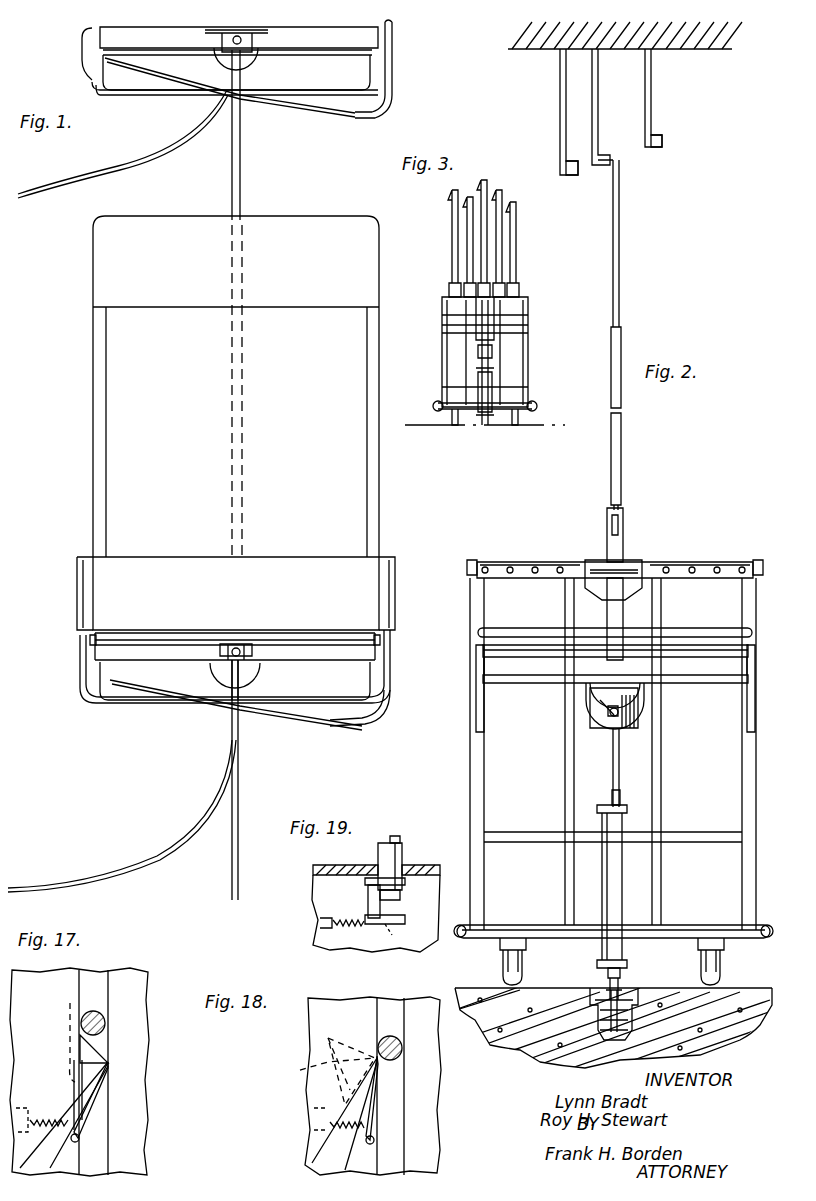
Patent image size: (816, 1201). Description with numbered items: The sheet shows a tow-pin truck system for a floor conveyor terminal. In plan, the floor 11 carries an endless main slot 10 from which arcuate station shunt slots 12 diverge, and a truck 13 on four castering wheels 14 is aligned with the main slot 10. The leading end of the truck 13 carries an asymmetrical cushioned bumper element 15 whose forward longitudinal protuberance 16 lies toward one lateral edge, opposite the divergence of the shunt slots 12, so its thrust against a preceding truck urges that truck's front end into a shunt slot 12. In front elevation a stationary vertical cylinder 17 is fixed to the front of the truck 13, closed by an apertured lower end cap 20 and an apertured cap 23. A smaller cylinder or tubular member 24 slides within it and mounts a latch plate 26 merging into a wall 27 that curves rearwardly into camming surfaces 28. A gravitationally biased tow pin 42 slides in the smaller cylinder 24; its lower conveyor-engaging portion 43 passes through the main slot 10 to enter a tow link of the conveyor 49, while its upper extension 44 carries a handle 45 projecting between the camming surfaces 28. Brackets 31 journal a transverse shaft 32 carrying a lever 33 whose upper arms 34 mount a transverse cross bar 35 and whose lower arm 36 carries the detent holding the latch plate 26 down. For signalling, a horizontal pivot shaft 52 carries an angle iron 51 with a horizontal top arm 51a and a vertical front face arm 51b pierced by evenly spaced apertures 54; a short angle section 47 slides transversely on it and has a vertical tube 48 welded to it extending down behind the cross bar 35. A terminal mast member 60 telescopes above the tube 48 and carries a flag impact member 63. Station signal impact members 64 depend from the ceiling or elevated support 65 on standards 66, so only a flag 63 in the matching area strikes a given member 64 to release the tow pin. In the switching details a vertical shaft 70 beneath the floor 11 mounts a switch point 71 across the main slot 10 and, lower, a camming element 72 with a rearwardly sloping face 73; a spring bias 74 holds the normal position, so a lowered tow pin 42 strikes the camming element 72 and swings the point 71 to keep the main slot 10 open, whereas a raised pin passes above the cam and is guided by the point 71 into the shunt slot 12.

In FIG. 1, the main slot 10 is at (240, 172).
In FIG. 2, the main slot 10 is at (622, 985).
In FIG. 19, the main slot 10 is at (404, 862).
In FIG. 17, the main slot 10 is at (98, 1120).
In FIG. 18, the main slot 10 is at (395, 1115).
In FIG. 1, the floor 11 is at (312, 206).
In FIG. 2, the floor 11 is at (548, 984).
In FIG. 19, the floor 11 is at (354, 866).
In FIG. 17, the floor 11 is at (140, 1000).
In FIG. 18, the floor 11 is at (360, 998).
In FIG. 1, the station shunt slot 12 is at (142, 160).
In FIG. 1, the truck 13 is at (100, 28).
In FIG. 3, the truck 13 is at (525, 362).
In FIG. 2, the castering wheels 14 is at (506, 982).
In FIG. 1, the asymmetrical cushioned bumper element 15 is at (282, 108).
In FIG. 2, the asymmetrical cushioned bumper element 15 is at (704, 916).
In FIG. 1, the forward longitudinal protuberance 16 is at (360, 112).
In FIG. 2, the forward longitudinal protuberance 16 is at (732, 926).
In FIG. 2, the stationary vertical cylinder 17 is at (606, 900).
In FIG. 2, the apertured lower end cap 20 is at (608, 972).
In FIG. 2, the apertured upper cap 23 is at (600, 806).
In FIG. 2, the smaller cylinder or tubular member 24 is at (620, 794).
In FIG. 1, the latch plate 26 is at (256, 70).
In FIG. 2, the latch plate 26 is at (620, 740).
In FIG. 2, the wall 27 is at (608, 728).
In FIG. 1, the camming surfaces 28 is at (212, 64).
In FIG. 2, the camming surfaces 28 is at (590, 696).
In FIG. 2, the brackets 31 is at (470, 682).
In FIG. 2, the transverse shaft 32 is at (722, 685).
In FIG. 2, the lever 33 is at (492, 680).
In FIG. 2, the upper arms 34 is at (478, 656).
In FIG. 2, the transverse cross bar 35 is at (696, 657).
In FIG. 2, the lower arm 36 is at (612, 704).
In FIG. 1, the tow pin 42 is at (262, 44).
In FIG. 2, the tow pin 42 is at (606, 990).
In FIG. 19, the tow pin 42 is at (402, 838).
In FIG. 17, the tow pin 42 is at (106, 1020).
In FIG. 18, the tow pin 42 is at (404, 1050).
In FIG. 19, the lower conveyor-engaging portion 43 is at (398, 894).
In FIG. 2, the upper extension 44 is at (612, 712).
In FIG. 1, the handle 45 is at (248, 66).
In FIG. 2, the handle 45 is at (620, 714).
In FIG. 2, the short angle section 47 is at (628, 562).
In FIG. 2, the vertical tube 48 is at (622, 614).
In FIG. 2, the conveyor 49 is at (540, 1040).
In FIG. 1, the angle iron 51 is at (340, 630).
In FIG. 2, the angle iron 51 is at (572, 562).
In FIG. 2, the horizontal top arm 51a is at (516, 562).
In FIG. 2, the vertical front face arm 51b is at (680, 562).
In FIG. 1, the horizontal pivot shaft 52 is at (376, 636).
In FIG. 2, the horizontal pivot shaft 52 is at (750, 566).
In FIG. 2, the apertures 54 is at (720, 548).
In FIG. 1, the terminal mast member 60 is at (245, 644).
In FIG. 2, the terminal mast member 60 is at (620, 258).
In FIG. 1, the flag impact member 63 is at (228, 646).
In FIG. 3, the flag impact member 63 is at (512, 200).
In FIG. 2, the station signal impact members 64 is at (562, 166).
In FIG. 2, the ceiling or elevated support 65 is at (512, 50).
In FIG. 2, the standards 66 is at (558, 98).
In FIG. 19, the vertical shaft 70 is at (368, 908).
In FIG. 17, the vertical shaft 70 is at (80, 1138).
In FIG. 18, the vertical shaft 70 is at (376, 1142).
In FIG. 19, the switch point 71 is at (368, 882).
In FIG. 17, the switch point 71 is at (100, 1090).
In FIG. 18, the switch point 71 is at (380, 1100).
In FIG. 17, the camming element 72 is at (90, 1052).
In FIG. 18, the camming element 72 is at (316, 1070).
In FIG. 17, the rearwardly sloping face 73 is at (70, 1010).
In FIG. 18, the rearwardly sloping face 73 is at (356, 1028).
In FIG. 19, the spring bias 74 is at (352, 928).
In FIG. 17, the spring bias 74 is at (50, 1118).
In FIG. 18, the spring bias 74 is at (350, 1130).